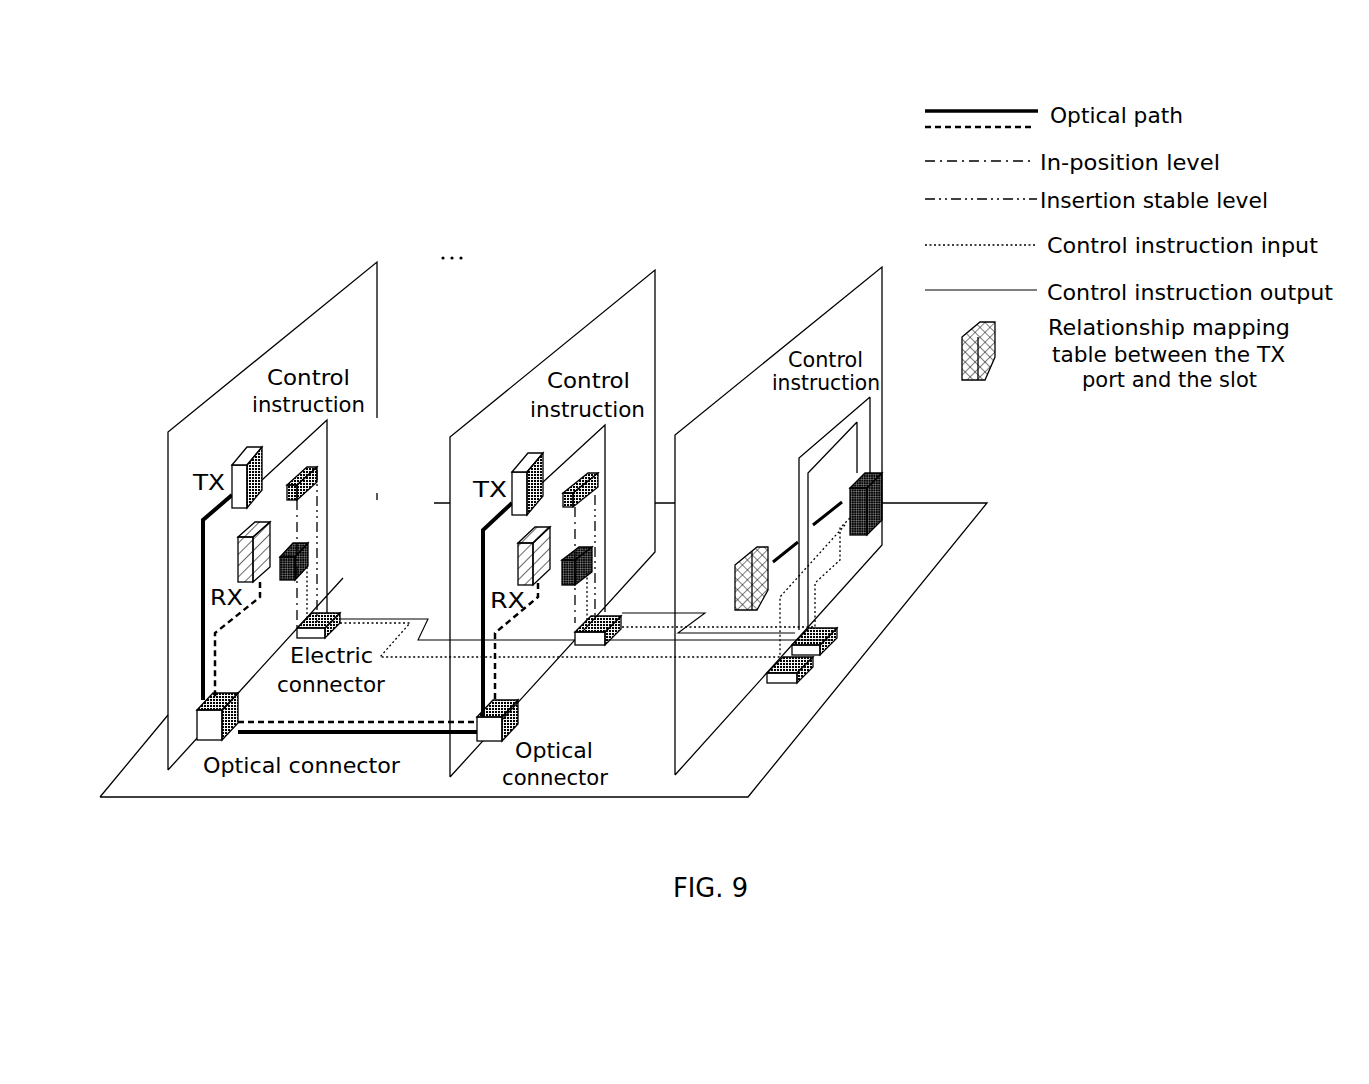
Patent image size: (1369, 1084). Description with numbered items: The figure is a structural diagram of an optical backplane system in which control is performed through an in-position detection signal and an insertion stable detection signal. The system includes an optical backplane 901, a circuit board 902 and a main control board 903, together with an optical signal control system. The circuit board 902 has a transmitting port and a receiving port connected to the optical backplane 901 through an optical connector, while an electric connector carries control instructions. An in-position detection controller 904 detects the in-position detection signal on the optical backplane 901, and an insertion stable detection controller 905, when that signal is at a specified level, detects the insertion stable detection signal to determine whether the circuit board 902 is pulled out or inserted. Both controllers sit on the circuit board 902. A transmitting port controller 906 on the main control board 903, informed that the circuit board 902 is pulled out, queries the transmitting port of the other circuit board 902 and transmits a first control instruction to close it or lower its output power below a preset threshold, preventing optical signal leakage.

The optical backplane 901 is at (705, 798).
The circuit board 902 is at (653, 270).
The main control board 903 is at (878, 270).
The in-position detection controller 904 is at (315, 472).
The insertion stable detection controller 905 is at (307, 553).
The transmitting port controller 906 is at (883, 490).